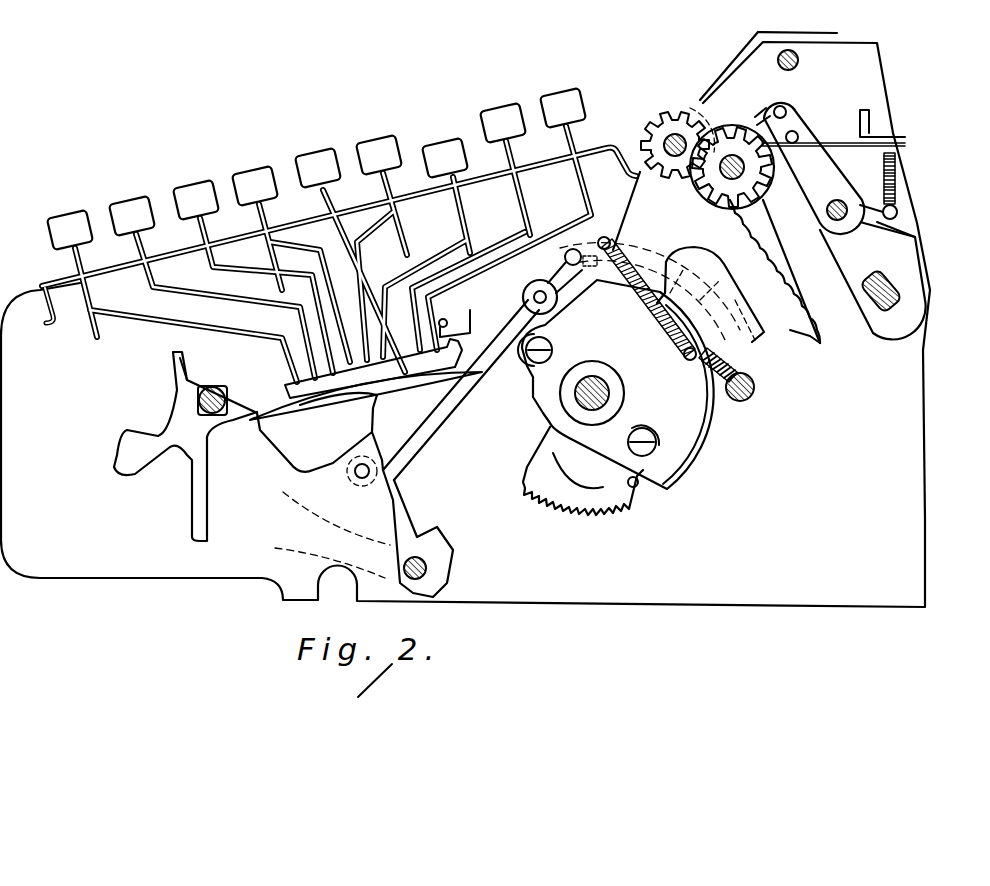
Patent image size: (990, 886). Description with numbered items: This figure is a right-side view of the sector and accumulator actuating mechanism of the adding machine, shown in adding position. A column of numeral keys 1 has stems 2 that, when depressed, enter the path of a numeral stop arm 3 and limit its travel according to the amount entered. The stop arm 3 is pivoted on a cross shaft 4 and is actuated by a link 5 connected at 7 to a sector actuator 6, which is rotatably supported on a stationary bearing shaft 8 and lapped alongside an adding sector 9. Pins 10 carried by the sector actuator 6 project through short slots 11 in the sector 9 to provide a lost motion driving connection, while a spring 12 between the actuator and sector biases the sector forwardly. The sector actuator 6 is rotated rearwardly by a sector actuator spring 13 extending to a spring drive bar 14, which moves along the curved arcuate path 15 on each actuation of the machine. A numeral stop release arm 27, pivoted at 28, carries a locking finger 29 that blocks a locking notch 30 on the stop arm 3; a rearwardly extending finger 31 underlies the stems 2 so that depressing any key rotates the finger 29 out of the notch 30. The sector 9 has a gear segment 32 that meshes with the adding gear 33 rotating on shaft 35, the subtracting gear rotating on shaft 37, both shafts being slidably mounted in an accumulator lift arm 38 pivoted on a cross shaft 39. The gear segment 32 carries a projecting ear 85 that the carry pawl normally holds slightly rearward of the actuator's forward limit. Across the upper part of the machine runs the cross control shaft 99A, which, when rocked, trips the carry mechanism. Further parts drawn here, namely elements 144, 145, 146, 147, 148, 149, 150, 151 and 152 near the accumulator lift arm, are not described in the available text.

The numeral keys 1 is at (512, 110).
The stems 2 is at (245, 300).
The numeral stop arm 3 is at (293, 450).
The cross shaft 4 is at (428, 568).
The link 5 is at (440, 412).
The sector actuator 6 is at (548, 427).
The connection point 7 is at (538, 292).
The stationary bearing shaft 8 is at (580, 393).
The adding sector 9 is at (672, 292).
The pins 10 is at (552, 347).
The short slots 11 is at (525, 360).
The spring 12 is at (612, 277).
The sector actuator spring 13 is at (743, 352).
The sector actuator spring drive bar 14 is at (756, 388).
The arcuate path 15 is at (748, 353).
The numeral stop release arm 27 is at (178, 417).
The pivot 28 is at (199, 397).
The locking finger 29 is at (190, 498).
The locking notch 30 is at (254, 393).
The rearwardly extending finger 31 is at (338, 402).
The gear segment 32 is at (784, 250).
The adding gear 33 is at (705, 116).
The shaft 35 is at (673, 130).
The shaft 37 is at (720, 190).
The accumulator lift arm 38 is at (850, 202).
The cross shaft 39 is at (900, 283).
The ear 85 is at (677, 483).
The cross control shaft 99A is at (796, 53).
The serrated edge 144 is at (758, 215).
The hub circle 145 is at (757, 197).
The hole 146 is at (781, 105).
The arm 147 is at (810, 160).
The pin 148 is at (840, 220).
The plate edge 149 is at (890, 220).
The link 150 is at (800, 125).
The spring 151 is at (897, 175).
The rod 152 is at (905, 145).